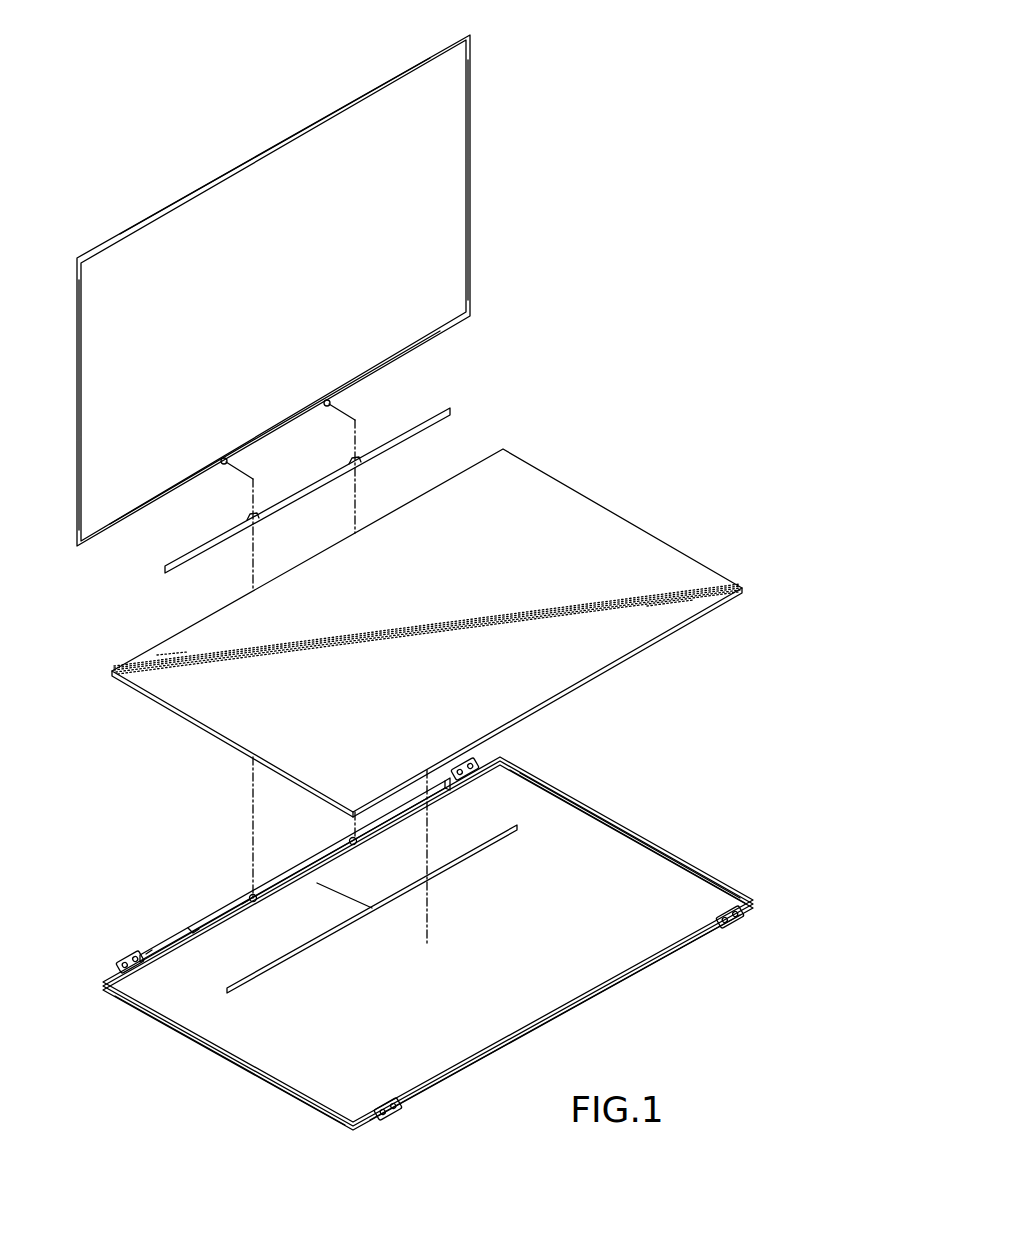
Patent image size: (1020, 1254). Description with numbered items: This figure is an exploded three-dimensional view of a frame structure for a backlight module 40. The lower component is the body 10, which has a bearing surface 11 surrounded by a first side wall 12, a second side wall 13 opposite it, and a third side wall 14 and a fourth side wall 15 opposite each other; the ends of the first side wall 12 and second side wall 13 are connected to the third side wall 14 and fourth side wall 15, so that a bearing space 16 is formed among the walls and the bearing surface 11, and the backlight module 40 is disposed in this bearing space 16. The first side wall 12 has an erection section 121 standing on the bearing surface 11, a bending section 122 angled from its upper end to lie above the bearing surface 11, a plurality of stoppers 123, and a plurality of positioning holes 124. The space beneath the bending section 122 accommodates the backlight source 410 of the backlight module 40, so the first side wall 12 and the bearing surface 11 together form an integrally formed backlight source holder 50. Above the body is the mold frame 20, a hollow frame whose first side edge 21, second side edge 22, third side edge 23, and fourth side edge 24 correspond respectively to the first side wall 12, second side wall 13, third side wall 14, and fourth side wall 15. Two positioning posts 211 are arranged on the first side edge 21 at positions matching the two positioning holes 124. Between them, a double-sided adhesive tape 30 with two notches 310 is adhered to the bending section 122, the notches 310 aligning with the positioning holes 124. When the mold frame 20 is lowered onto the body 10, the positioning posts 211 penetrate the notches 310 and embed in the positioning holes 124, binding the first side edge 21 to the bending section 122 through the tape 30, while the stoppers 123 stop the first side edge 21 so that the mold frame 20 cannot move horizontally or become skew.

The body 10 is at (428, 950).
The bearing surface 11 is at (118, 956).
The first side wall 12 is at (212, 822).
The erection section 121 is at (150, 952).
The bending section 122 is at (193, 932).
The stoppers 123 is at (250, 895).
The positioning holes 124 is at (247, 903).
The second side wall 13 is at (592, 1000).
The third side wall 14 is at (643, 837).
The fourth side wall 15 is at (223, 1057).
The bearing space 16 is at (673, 902).
The mold frame 20 is at (253, 147).
The first side edge 21 is at (440, 333).
The positioning posts 211 is at (232, 463).
The second side edge 22 is at (369, 90).
The third side edge 23 is at (474, 162).
The fourth side edge 24 is at (76, 392).
The double-sided adhesive tape 30 is at (462, 412).
The notches 310 is at (358, 463).
The backlight module 40 is at (572, 487).
The backlight source 410 is at (277, 968).
The backlight source holder 50 is at (398, 938).